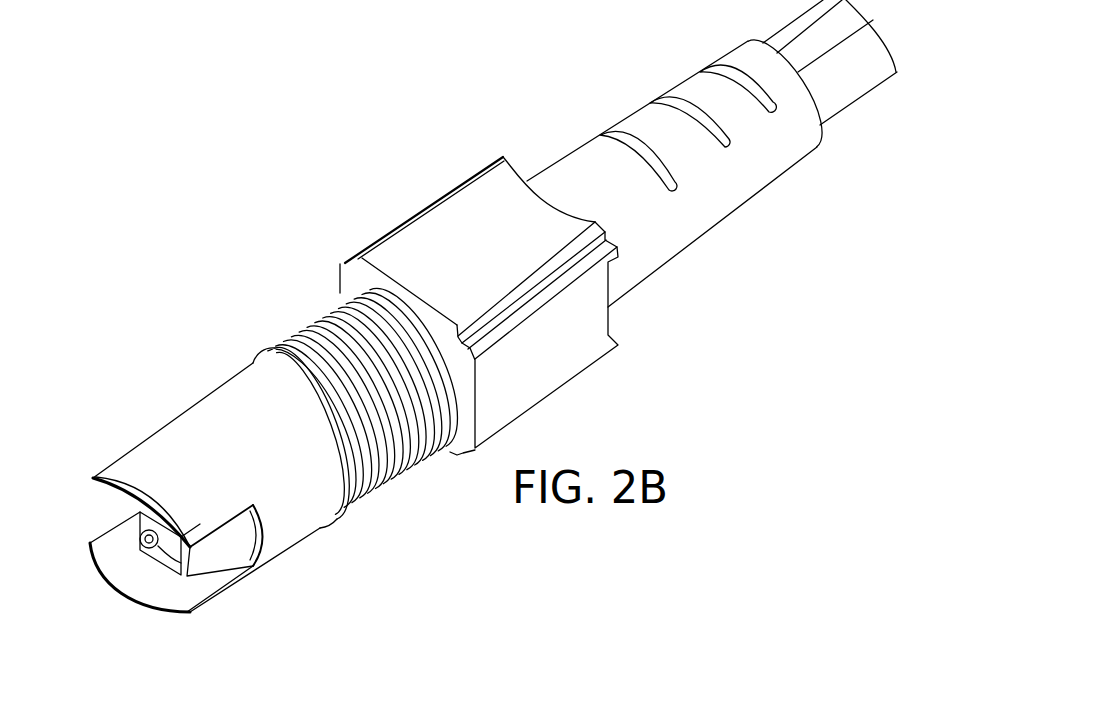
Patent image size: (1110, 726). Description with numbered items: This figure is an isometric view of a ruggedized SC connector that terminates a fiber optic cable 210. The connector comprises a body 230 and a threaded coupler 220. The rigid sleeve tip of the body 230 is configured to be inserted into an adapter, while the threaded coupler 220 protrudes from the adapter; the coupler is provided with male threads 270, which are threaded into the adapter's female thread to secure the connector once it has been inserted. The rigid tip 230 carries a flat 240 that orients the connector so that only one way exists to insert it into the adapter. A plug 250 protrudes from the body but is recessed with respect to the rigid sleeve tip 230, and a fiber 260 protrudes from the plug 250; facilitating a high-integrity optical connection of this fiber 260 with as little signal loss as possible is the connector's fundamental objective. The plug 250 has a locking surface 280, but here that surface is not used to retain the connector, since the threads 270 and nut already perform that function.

The fiber optic cable 210 is at (572, 162).
The threaded coupler 220 is at (427, 222).
The body 230 is at (170, 425).
The flat 240 is at (133, 587).
The plug 250 is at (197, 557).
The fiber 260 is at (172, 560).
The male threads 270 is at (301, 322).
The locking surface 280 is at (228, 527).